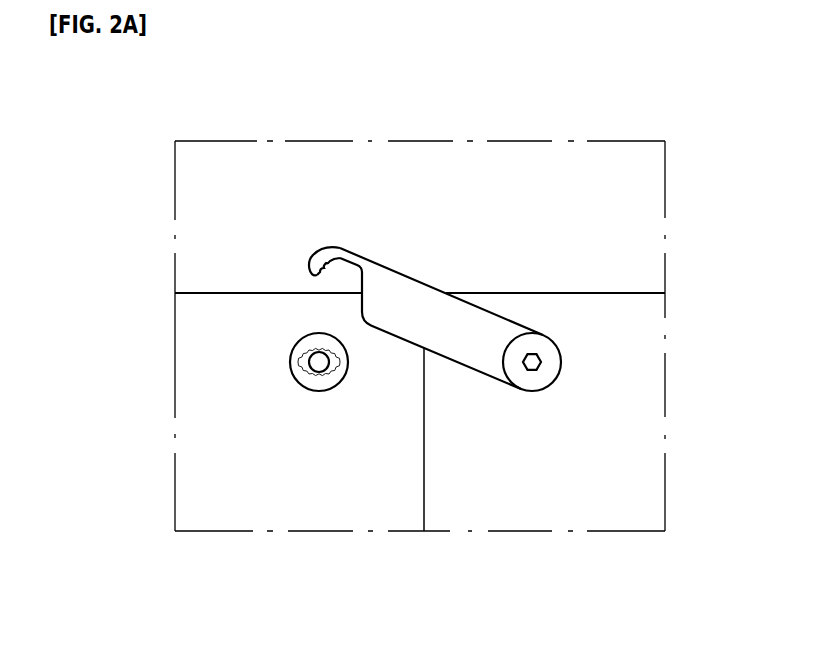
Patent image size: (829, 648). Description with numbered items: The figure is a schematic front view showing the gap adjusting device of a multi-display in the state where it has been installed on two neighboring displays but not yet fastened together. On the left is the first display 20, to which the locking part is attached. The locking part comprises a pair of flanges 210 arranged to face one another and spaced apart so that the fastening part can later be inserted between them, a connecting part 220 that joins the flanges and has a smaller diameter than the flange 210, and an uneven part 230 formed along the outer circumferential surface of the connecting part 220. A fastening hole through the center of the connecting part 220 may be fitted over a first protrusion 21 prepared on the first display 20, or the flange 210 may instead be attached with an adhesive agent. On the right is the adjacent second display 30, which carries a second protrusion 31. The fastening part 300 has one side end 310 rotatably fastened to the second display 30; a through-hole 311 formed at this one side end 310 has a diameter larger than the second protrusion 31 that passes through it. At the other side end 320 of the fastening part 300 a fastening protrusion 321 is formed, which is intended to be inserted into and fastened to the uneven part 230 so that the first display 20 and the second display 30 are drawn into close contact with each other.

The first display 20 is at (224, 472).
The first protrusion 21 is at (319, 362).
The second display 30 is at (637, 465).
The second protrusion 31 is at (629, 399).
The flange 210 is at (317, 333).
The connecting part 220 is at (300, 362).
The uneven part 230 is at (214, 378).
The fastening part 300 is at (422, 241).
The one side end 310 is at (543, 340).
The through-hole 311 is at (541, 360).
The other side end 320 is at (238, 190).
The fastening protrusion 321 is at (323, 272).